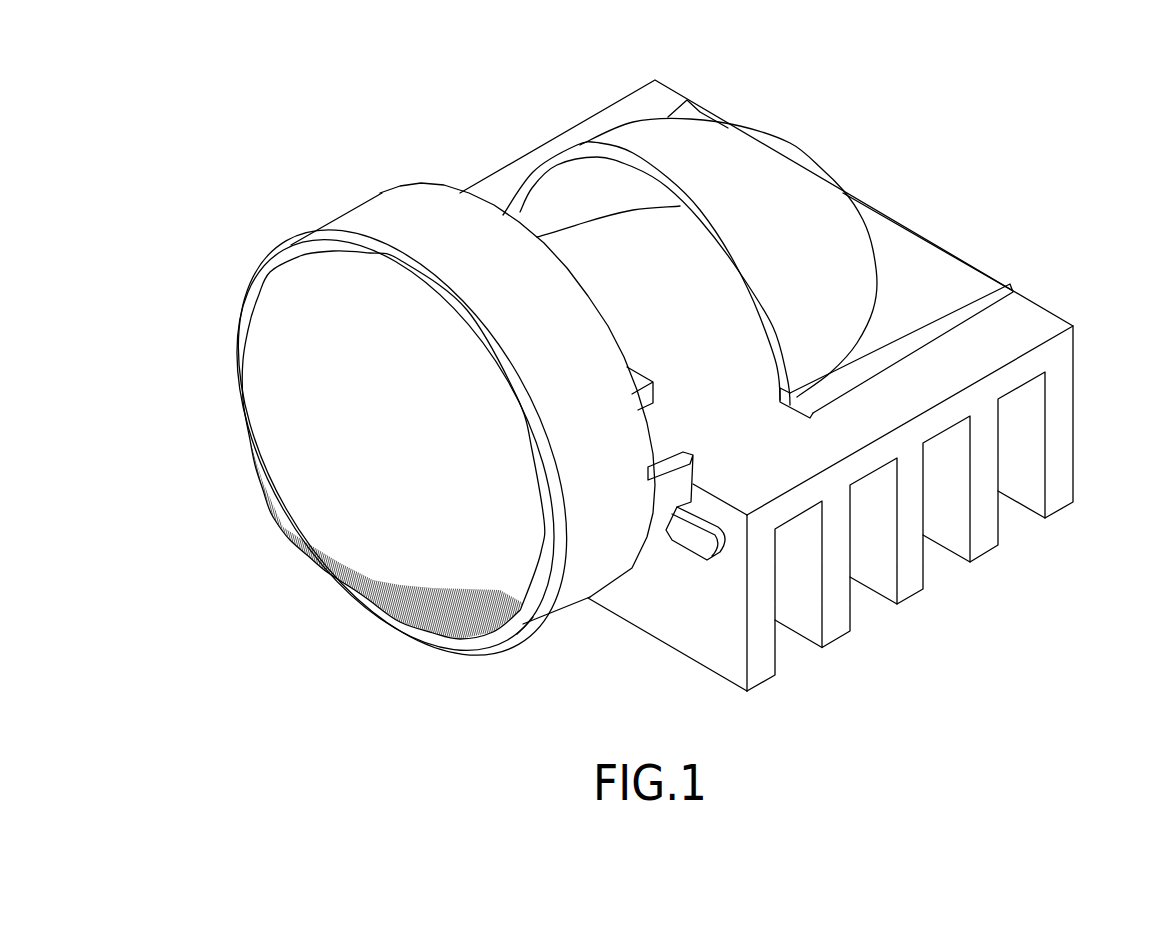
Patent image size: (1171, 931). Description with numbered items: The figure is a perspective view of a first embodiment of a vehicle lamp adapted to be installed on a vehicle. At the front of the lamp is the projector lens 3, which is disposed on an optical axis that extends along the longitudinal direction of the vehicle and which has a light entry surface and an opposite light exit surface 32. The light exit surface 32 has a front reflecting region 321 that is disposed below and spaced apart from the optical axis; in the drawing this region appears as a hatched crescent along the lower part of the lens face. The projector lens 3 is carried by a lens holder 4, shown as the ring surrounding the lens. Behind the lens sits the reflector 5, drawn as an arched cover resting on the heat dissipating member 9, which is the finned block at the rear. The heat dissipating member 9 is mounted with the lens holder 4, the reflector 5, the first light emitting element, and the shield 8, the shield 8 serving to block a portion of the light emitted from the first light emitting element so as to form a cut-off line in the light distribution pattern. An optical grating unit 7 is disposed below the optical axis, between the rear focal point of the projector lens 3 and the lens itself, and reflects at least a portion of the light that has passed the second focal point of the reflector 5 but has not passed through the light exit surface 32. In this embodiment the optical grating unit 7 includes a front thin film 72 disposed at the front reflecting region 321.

The projector lens 3 is at (354, 466).
The light exit surface 32 is at (264, 461).
The front reflecting region 321 is at (358, 603).
The lens holder 4 is at (348, 203).
The reflector 5 is at (809, 140).
The optical grating unit 7 is at (473, 446).
The front thin film 72 is at (521, 620).
The shield 8 is at (652, 420).
The heat dissipating member 9 is at (1093, 405).